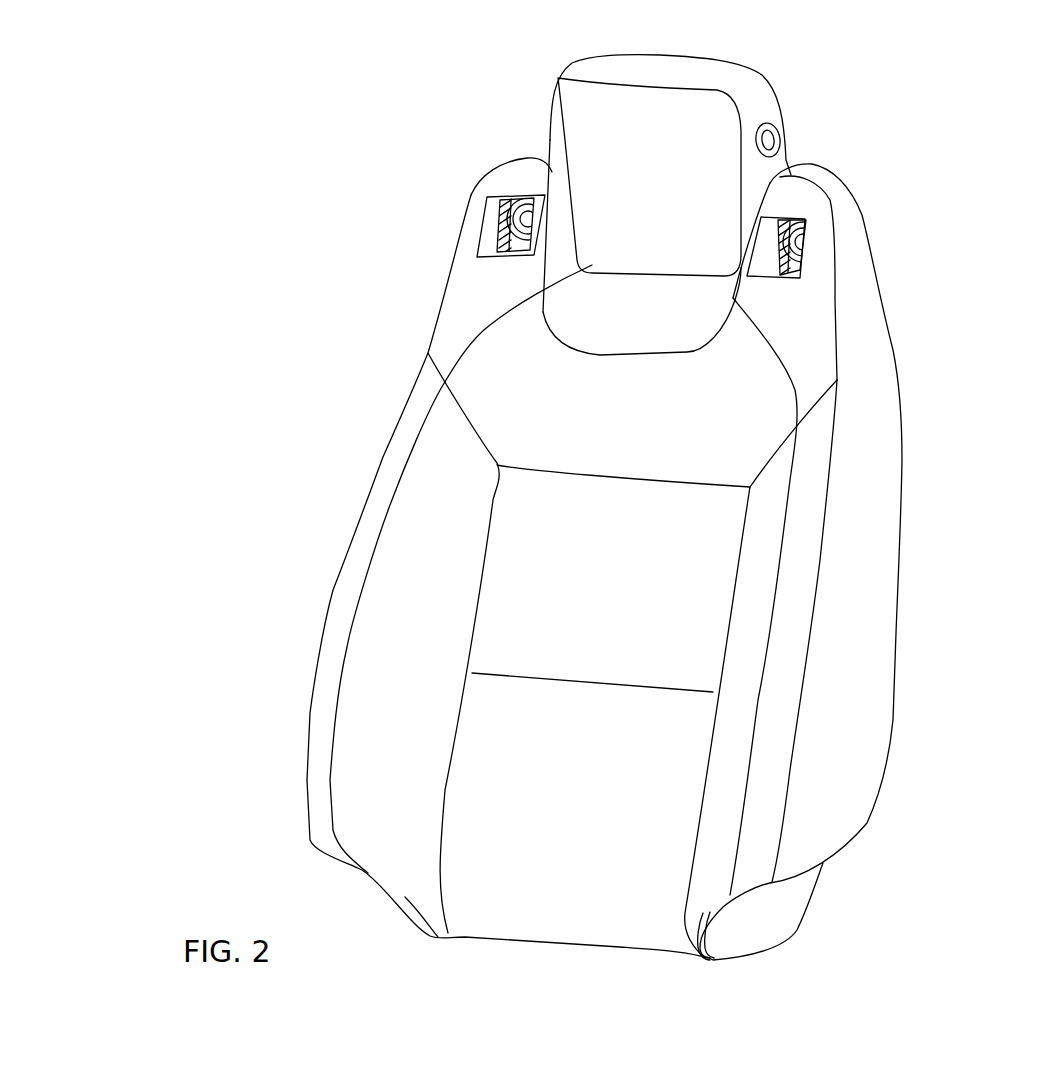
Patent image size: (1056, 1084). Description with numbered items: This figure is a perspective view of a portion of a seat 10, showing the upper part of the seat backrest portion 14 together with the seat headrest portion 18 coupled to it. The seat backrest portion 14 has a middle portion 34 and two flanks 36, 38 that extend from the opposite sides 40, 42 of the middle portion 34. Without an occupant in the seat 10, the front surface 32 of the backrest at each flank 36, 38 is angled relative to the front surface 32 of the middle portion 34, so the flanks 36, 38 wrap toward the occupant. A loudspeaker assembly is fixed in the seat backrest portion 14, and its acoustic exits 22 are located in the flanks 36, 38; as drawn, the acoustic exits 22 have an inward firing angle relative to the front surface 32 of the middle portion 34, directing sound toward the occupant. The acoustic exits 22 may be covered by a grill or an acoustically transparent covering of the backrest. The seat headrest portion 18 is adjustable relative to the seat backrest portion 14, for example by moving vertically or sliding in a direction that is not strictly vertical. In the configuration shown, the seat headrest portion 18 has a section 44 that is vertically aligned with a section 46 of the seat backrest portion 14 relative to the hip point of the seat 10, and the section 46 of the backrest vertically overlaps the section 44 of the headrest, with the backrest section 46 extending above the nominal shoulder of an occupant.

The seat 10 is at (392, 208).
The seat backrest portion 14 is at (940, 416).
The seat headrest portion 18 is at (507, 94).
The acoustic exit 22 is at (490, 239).
The front surface 32 is at (504, 180).
The middle portion 34 is at (618, 406).
The flank 36 is at (815, 328).
The flank 38 is at (498, 304).
The side of the middle portion 40 is at (781, 355).
The side of the middle portion 42 is at (481, 343).
The section of the seat headrest portion 44 is at (683, 253).
The section of the seat backrest portion 46 is at (532, 178).